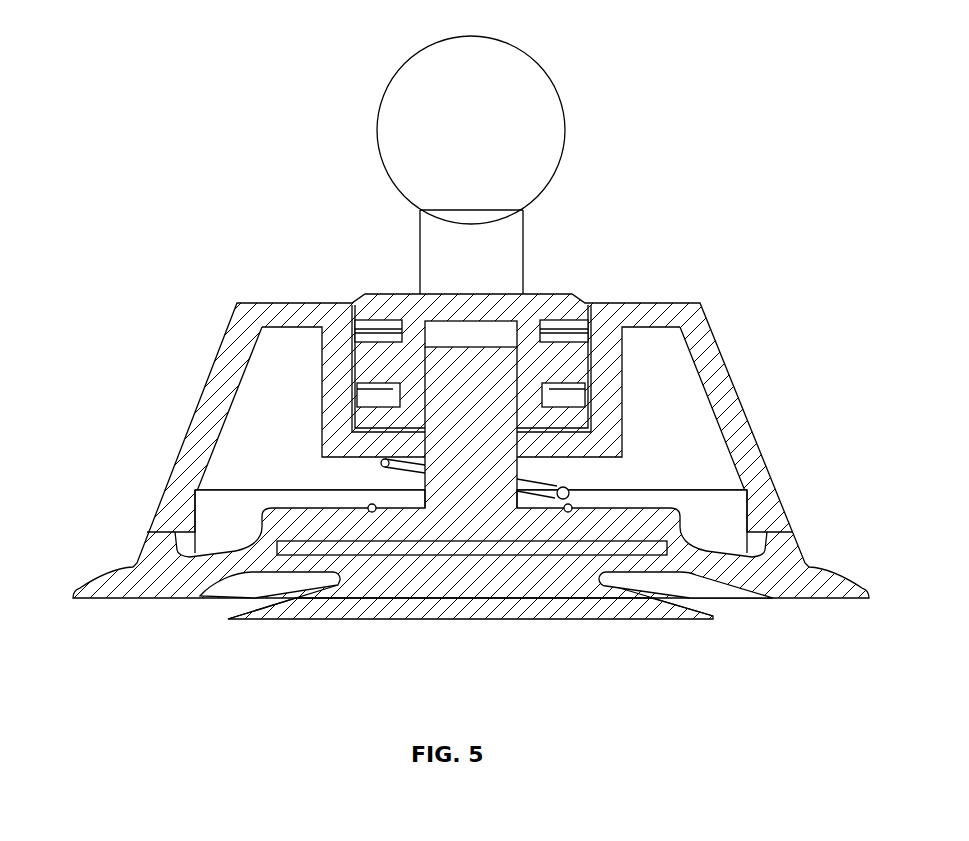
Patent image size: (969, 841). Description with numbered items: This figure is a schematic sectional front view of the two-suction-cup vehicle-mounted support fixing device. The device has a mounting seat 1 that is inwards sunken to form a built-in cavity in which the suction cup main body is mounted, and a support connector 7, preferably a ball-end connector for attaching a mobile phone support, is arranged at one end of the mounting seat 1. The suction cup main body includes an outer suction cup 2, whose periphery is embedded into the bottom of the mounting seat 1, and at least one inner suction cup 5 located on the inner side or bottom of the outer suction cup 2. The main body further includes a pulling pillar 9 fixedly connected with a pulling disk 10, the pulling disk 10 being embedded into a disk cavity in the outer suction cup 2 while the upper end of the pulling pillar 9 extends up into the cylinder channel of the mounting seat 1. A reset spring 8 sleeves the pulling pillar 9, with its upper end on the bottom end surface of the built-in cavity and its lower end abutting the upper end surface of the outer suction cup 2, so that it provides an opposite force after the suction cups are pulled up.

The mounting seat 1 is at (748, 348).
The outer suction cup 2 is at (131, 604).
The inner suction cup 5 is at (267, 621).
The support connector 7 is at (571, 136).
The reset spring 8 is at (368, 470).
The pulling pillar 9 is at (531, 467).
The pulling disk 10 is at (374, 540).